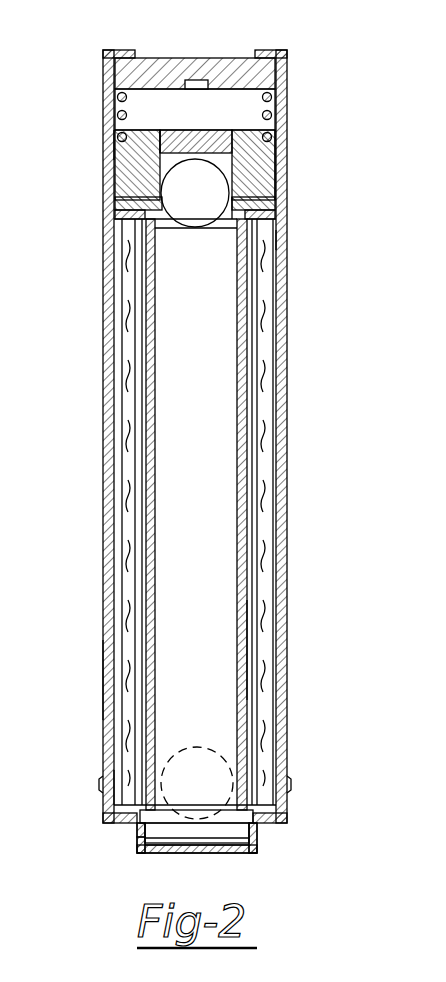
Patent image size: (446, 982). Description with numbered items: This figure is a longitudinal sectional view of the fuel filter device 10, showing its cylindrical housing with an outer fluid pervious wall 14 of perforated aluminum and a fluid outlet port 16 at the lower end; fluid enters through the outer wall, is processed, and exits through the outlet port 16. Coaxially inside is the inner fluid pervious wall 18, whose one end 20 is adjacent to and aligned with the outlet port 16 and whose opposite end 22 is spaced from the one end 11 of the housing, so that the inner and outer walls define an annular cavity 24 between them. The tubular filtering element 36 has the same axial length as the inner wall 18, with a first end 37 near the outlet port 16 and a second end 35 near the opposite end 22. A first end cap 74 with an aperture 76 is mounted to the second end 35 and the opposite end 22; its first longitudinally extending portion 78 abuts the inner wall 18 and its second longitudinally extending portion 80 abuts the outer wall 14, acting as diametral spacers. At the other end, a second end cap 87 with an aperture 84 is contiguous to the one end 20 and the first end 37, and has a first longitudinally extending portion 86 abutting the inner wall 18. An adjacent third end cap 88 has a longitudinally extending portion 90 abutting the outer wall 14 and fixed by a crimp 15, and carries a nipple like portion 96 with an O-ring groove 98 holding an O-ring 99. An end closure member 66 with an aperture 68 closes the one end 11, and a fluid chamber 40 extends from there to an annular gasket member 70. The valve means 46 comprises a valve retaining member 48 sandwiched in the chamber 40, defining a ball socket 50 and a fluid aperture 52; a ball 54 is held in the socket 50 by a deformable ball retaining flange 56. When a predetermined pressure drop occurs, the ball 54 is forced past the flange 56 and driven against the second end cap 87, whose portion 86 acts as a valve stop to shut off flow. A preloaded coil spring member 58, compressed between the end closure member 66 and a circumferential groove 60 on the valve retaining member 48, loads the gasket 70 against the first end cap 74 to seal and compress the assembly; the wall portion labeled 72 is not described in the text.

The fuel filter device 10 is at (305, 358).
The one end of the housing 11 is at (289, 50).
The outer fluid pervious wall 14 is at (290, 710).
The crimp 15 is at (292, 786).
The fluid outlet port 16 is at (235, 856).
The inner fluid pervious wall 18 is at (100, 327).
The one end of the inner fluid pervious wall 20 is at (250, 700).
The opposite end of the inner fluid pervious wall 22 is at (235, 255).
The annular cavity 24 is at (205, 630).
The second end of the tubular filtering element 35 is at (110, 240).
The tubular filtering element 36 is at (110, 685).
The first end of the tubular filtering element 37 is at (118, 790).
The fluid chamber 40 is at (210, 116).
The valve means 46 is at (115, 170).
The valve retaining member 48 is at (288, 165).
The ball socket 50 is at (268, 135).
The fluid aperture 52 is at (163, 143).
The ball 54 is at (203, 206).
The ball retaining flange 56 is at (288, 153).
The coil spring member 58 is at (288, 102).
The circumferential groove 60 is at (288, 125).
The end closure member 66 is at (288, 70).
The aperture in the end closure member 68 is at (200, 80).
The annular gasket member 70 is at (288, 183).
The casing upper wall 72 is at (115, 148).
The first end cap 74 is at (288, 207).
The aperture in the first end cap 76 is at (288, 145).
The first longitudinally extending portion of the first end cap 78 is at (170, 225).
The second longitudinally extending portion of the first end cap 80 is at (288, 235).
The aperture in the second end cap 84 is at (215, 835).
The first longitudinally extending portion of the second end cap 86 is at (197, 783).
The second end cap 87 is at (165, 800).
The third end cap 88 is at (137, 835).
The longitudinally extending portion of the third end cap 90 is at (262, 818).
The nipple like portion 96 is at (140, 850).
The O-ring groove 98 is at (245, 862).
The O-ring 99 is at (258, 835).